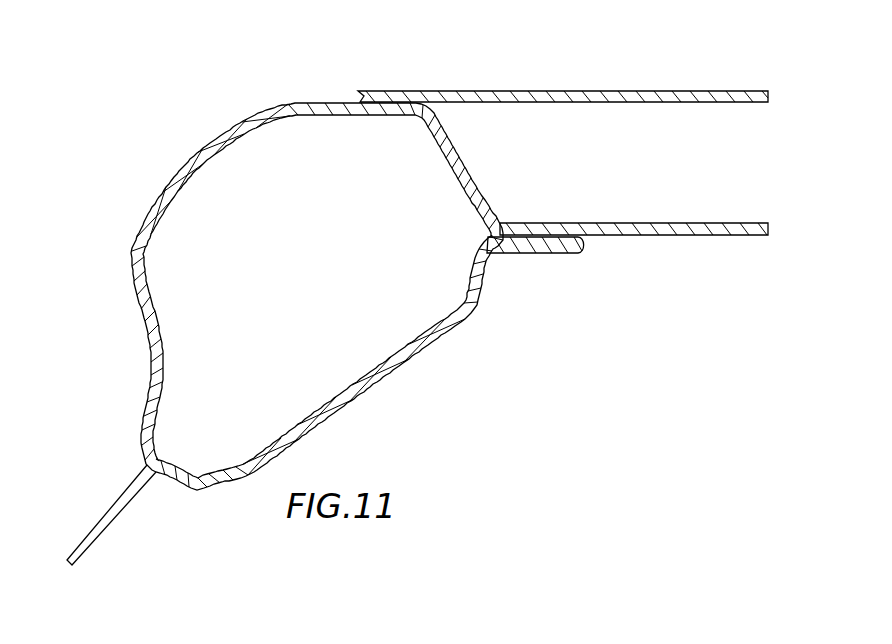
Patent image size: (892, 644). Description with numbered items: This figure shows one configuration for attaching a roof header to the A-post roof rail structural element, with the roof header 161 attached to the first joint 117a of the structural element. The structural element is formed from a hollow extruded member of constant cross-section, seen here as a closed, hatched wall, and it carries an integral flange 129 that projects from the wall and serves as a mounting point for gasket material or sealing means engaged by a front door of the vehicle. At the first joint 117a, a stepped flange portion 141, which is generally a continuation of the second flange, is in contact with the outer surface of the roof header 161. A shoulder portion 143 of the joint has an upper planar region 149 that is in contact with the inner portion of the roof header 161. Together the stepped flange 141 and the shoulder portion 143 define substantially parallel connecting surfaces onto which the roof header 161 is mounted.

The upper planar region 149 is at (330, 100).
The shoulder portion 143 is at (437, 122).
The roof header 161 is at (722, 222).
The stepped flange portion 141 is at (532, 253).
The first joint region 117a is at (423, 340).
The integral flange 129 is at (108, 525).